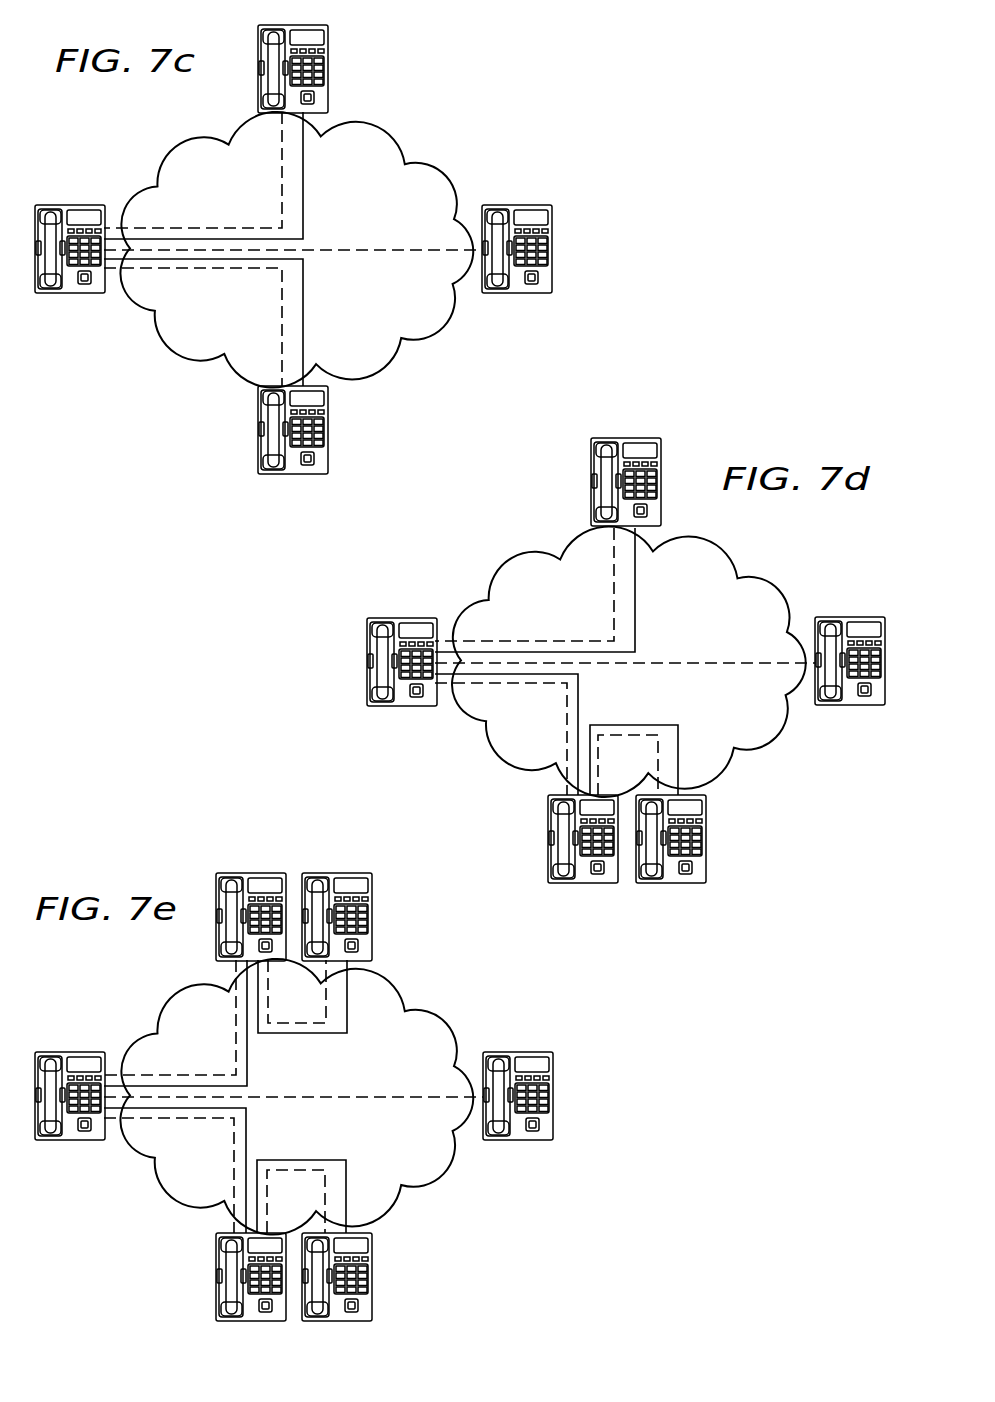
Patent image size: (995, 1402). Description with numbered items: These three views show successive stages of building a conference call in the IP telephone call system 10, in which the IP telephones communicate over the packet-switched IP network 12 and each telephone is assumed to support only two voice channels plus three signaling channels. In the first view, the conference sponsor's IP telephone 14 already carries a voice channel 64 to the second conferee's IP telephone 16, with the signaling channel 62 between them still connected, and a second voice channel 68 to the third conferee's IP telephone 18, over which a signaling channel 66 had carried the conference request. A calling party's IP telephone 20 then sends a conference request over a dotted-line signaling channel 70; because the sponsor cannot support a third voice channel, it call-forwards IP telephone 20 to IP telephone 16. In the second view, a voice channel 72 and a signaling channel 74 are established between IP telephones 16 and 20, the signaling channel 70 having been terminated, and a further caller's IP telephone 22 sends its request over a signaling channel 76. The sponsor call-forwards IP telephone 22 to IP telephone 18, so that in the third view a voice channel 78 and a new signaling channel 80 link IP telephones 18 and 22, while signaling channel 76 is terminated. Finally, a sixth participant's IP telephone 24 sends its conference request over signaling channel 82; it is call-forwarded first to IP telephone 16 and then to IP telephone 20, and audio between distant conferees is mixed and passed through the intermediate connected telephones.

In FIG. 7c, the IP telephone call system 10 is at (152, 388).
In FIG. 7d, the IP telephone call system 10 is at (768, 800).
In FIG. 7e, the IP telephone call system 10 is at (145, 1213).
In FIG. 7c, the IP network 12 is at (447, 160).
In FIG. 7d, the IP network 12 is at (490, 586).
In FIG. 7e, the IP network 12 is at (428, 1178).
In FIG. 7c, the IP telephone 14 is at (72, 205).
In FIG. 7d, the IP telephone 14 is at (402, 618).
In FIG. 7e, the IP telephone 14 is at (72, 1052).
In FIG. 7c, the IP telephone 16 is at (292, 475).
In FIG. 7d, the IP telephone 16 is at (580, 884).
In FIG. 7e, the IP telephone 16 is at (249, 1322).
In FIG. 7c, the IP telephone 18 is at (328, 67).
In FIG. 7d, the IP telephone 18 is at (625, 438).
In FIG. 7e, the IP telephone 18 is at (250, 873).
In FIG. 7c, the IP telephone 20 is at (515, 295).
In FIG. 7d, the IP telephone 20 is at (668, 884).
In FIG. 7e, the IP telephone 20 is at (333, 1322).
In FIG. 7d, the IP telephone 22 is at (847, 707).
In FIG. 7e, the IP telephone 22 is at (336, 873).
In FIG. 7e, the IP telephone 24 is at (515, 1141).
In FIG. 7c, the signaling channel 62 is at (280, 300).
In FIG. 7d, the signaling channel 62 is at (565, 710).
In FIG. 7e, the signaling channel 62 is at (232, 1145).
In FIG. 7c, the voice communication channel 64 is at (305, 302).
In FIG. 7d, the voice communication channel 64 is at (580, 696).
In FIG. 7e, the voice communication channel 64 is at (248, 1128).
In FIG. 7c, the signaling channel 66 is at (280, 182).
In FIG. 7d, the signaling channel 66 is at (612, 596).
In FIG. 7e, the signaling channel 66 is at (234, 1051).
In FIG. 7c, the voice channel 68 is at (305, 188).
In FIG. 7d, the voice channel 68 is at (637, 620).
In FIG. 7e, the voice channel 68 is at (249, 1066).
In FIG. 7c, the signaling channel 70 is at (402, 253).
In FIG. 7d, the voice channel 72 is at (680, 739).
In FIG. 7e, the voice channel 72 is at (348, 1168).
In FIG. 7d, the signaling channel 74 is at (647, 735).
In FIG. 7e, the signaling channel 74 is at (316, 1170).
In FIG. 7d, the signaling channel 76 is at (733, 662).
In FIG. 7e, the voice channel 78 is at (349, 1021).
In FIG. 7e, the signaling channel 80 is at (314, 1024).
In FIG. 7e, the signaling channel 82 is at (402, 1097).